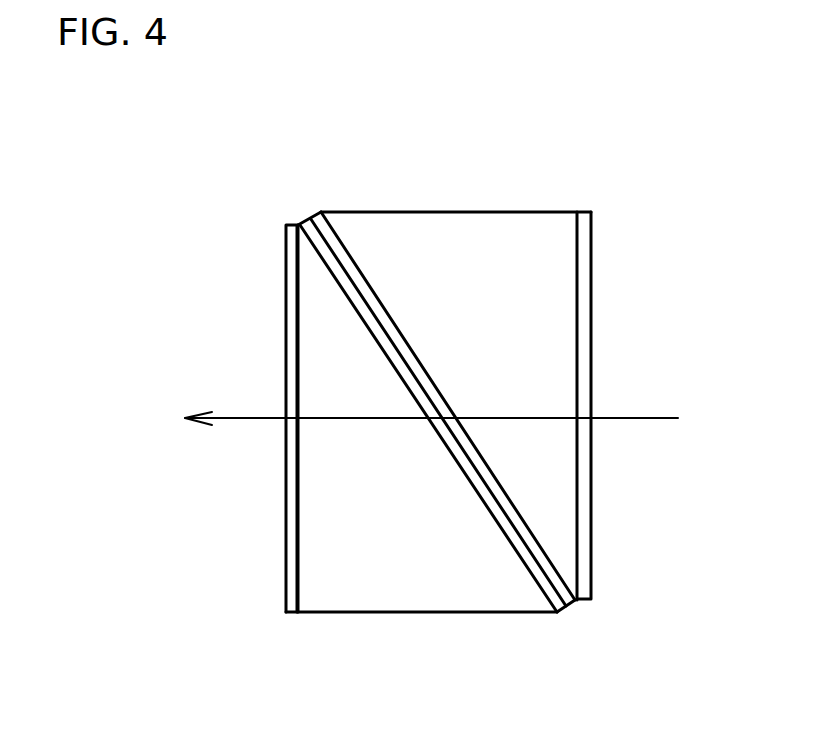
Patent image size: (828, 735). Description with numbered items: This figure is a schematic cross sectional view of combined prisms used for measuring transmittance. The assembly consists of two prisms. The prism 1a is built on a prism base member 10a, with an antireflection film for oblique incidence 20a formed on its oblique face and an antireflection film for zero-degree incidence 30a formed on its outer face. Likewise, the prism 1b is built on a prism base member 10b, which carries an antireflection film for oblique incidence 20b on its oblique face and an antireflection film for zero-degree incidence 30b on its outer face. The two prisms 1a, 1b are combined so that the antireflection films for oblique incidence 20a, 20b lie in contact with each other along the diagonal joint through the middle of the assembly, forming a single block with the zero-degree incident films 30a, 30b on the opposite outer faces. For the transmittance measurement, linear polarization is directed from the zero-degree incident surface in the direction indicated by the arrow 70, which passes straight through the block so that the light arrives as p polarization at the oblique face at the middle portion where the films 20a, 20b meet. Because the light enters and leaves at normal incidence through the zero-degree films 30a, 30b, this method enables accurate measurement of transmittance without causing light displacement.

The prism 1a is at (334, 622).
The prism 1b is at (556, 200).
The prism base member 10a is at (410, 603).
The prism base member 10b is at (488, 222).
The antireflection film for oblique incidence 20a is at (522, 555).
The antireflection film for oblique incidence 20b is at (358, 272).
The antireflection film for 0° incidence 30a is at (291, 538).
The antireflection film for 0° incidence 30b is at (585, 348).
The arrow 70 is at (647, 420).